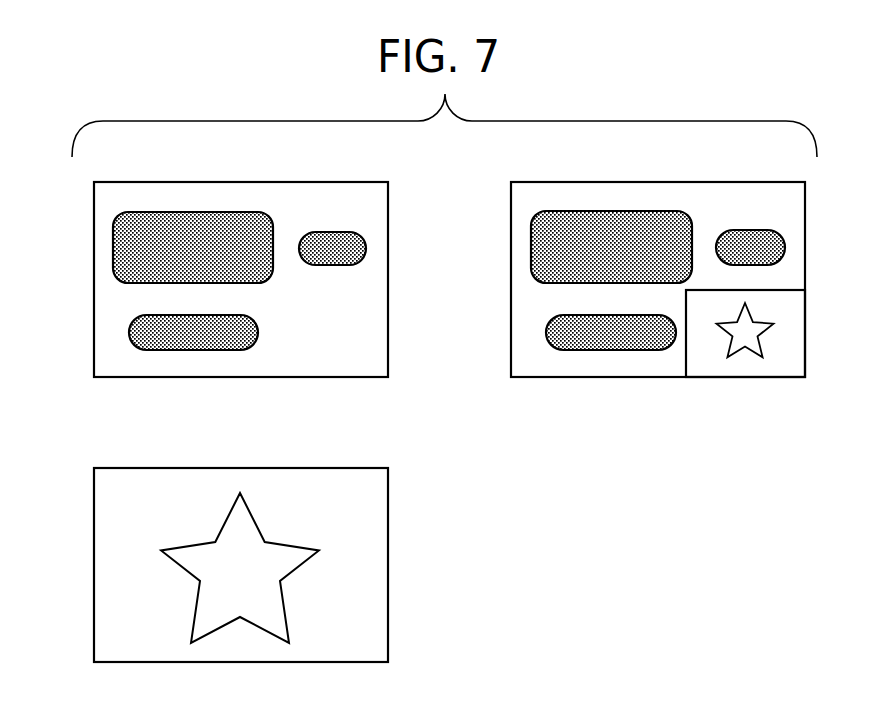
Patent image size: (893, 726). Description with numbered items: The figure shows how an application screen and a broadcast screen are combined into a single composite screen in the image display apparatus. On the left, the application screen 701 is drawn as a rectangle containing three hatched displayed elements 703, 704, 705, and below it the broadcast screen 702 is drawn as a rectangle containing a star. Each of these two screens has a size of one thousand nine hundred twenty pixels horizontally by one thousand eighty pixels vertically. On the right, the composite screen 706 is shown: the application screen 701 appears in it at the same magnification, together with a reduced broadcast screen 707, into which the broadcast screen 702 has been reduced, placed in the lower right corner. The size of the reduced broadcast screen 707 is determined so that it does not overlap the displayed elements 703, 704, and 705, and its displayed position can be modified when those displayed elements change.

The application screen 701 is at (165, 182).
The broadcast screen 702 is at (165, 468).
The displayed element 703 is at (274, 222).
The displayed element 704 is at (258, 330).
The displayed element 705 is at (330, 265).
The composite screen 706 is at (583, 182).
The reduced broadcast screen 707 is at (747, 377).